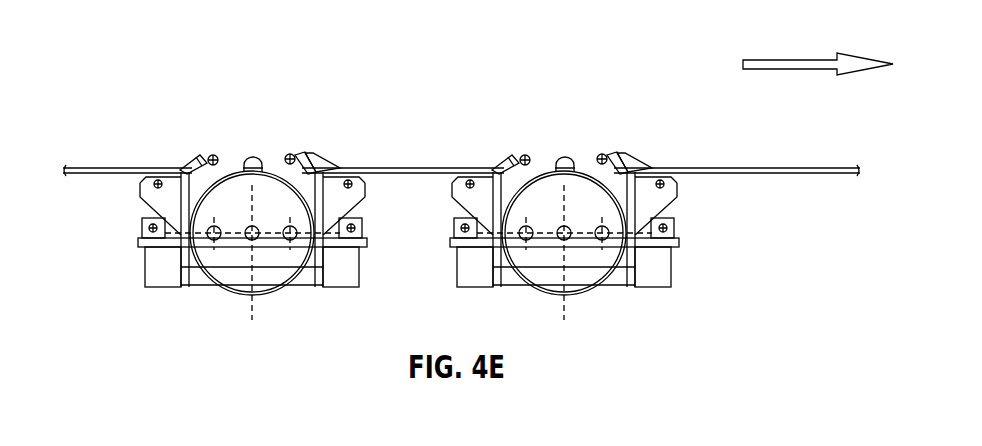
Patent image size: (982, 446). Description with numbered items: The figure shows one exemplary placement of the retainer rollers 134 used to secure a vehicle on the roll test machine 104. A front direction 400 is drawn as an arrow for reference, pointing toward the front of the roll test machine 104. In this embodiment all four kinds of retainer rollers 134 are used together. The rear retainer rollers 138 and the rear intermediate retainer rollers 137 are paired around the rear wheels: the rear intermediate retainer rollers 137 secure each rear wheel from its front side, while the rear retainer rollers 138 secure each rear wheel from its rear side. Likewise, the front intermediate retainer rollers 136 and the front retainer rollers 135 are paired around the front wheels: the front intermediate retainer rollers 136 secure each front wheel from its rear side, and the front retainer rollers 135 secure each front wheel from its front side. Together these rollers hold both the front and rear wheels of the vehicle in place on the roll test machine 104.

The roll test machine 104 is at (106, 48).
The front direction 400 is at (802, 70).
The retainer rollers 134 is at (415, 208).
The rear retainer rollers 138 is at (190, 168).
The rear intermediate retainer rollers 137 is at (327, 163).
The front intermediate retainer rollers 136 is at (485, 135).
The front retainer rollers 135 is at (650, 135).